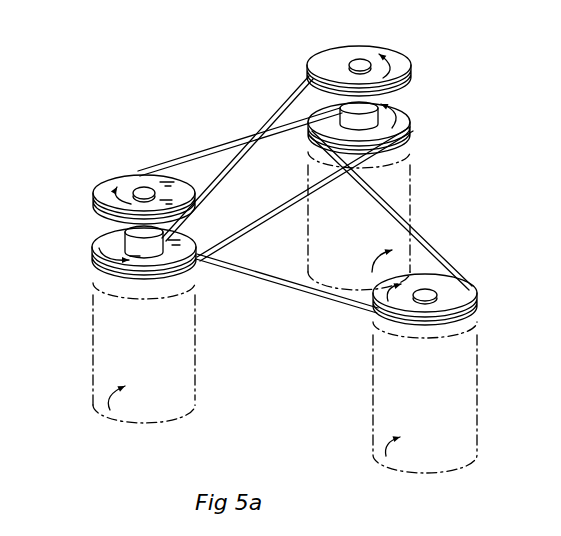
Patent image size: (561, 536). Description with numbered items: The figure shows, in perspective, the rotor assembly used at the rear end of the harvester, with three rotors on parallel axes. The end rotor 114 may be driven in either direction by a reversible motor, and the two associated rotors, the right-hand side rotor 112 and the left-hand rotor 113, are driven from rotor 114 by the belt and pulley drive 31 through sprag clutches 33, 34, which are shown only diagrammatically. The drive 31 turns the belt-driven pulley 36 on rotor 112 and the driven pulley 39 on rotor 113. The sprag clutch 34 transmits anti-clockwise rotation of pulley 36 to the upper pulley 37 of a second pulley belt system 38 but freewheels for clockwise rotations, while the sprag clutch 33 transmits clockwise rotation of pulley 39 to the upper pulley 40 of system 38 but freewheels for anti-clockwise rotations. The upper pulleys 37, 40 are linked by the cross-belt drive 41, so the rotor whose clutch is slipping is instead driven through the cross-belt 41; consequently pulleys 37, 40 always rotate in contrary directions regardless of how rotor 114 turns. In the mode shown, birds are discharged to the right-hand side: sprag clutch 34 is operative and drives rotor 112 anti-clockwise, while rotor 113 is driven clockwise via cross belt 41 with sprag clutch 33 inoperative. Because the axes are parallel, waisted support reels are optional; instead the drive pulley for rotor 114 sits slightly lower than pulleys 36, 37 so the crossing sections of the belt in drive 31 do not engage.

The belt and pulley drive 31 is at (302, 302).
The sprag clutch 33 is at (182, 234).
The sprag clutch 34 is at (338, 123).
The belt-driven pulley 36 is at (403, 112).
The upper pulley 37 is at (372, 46).
The second pulley belt system 38 is at (240, 108).
The driven pulley 39 is at (103, 243).
The upper pulley 40 is at (125, 160).
The cross-belt drive 41 is at (291, 97).
The right-hand side rotor 112 is at (412, 194).
The left-hand rotor 113 is at (93, 315).
The end rotor 114 is at (480, 369).